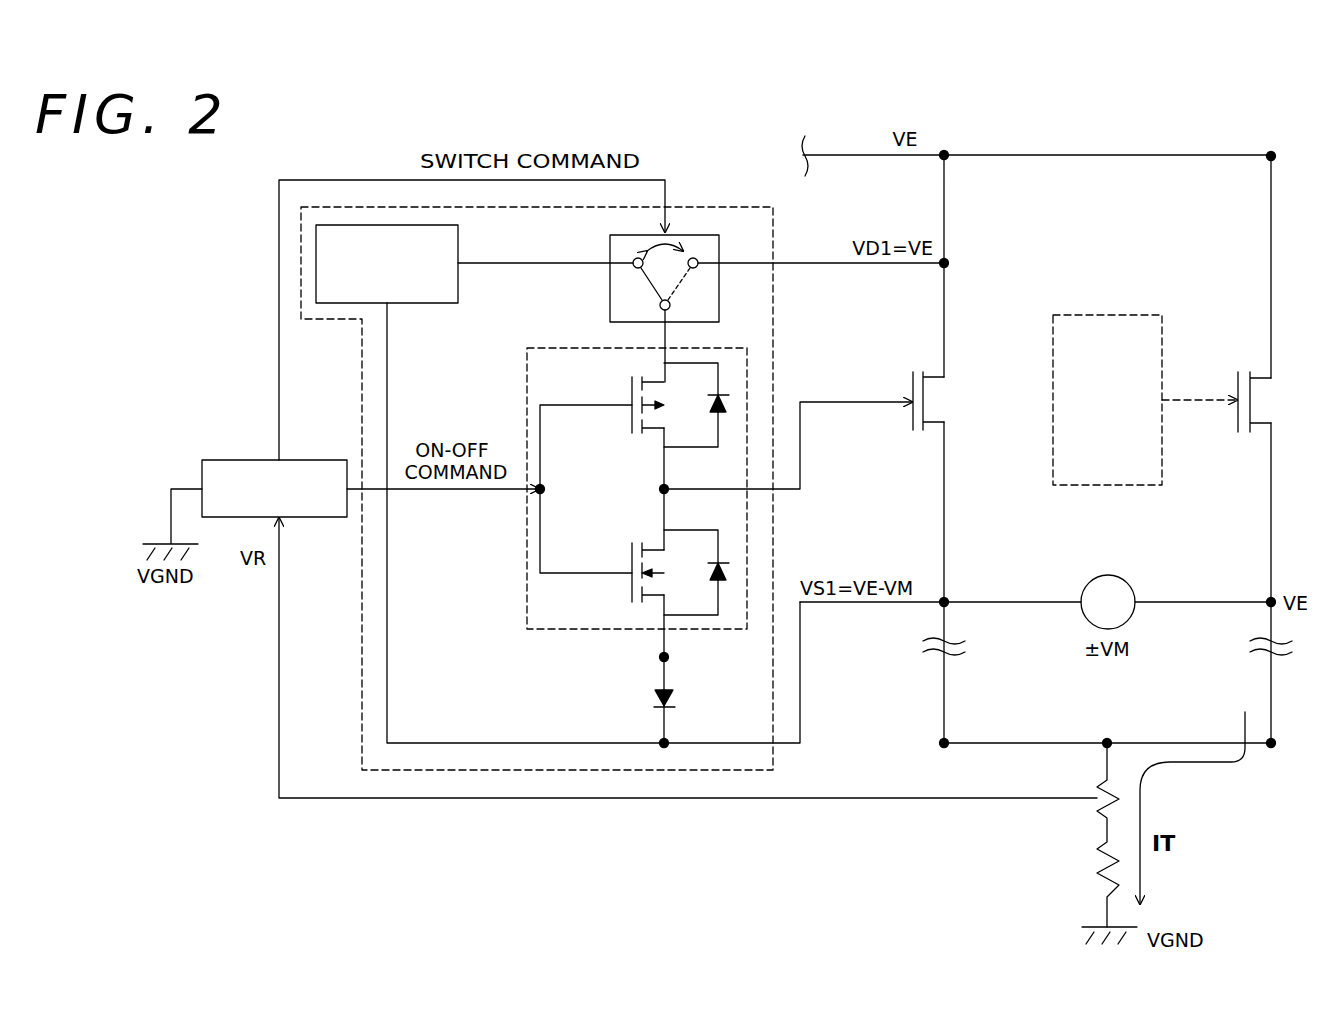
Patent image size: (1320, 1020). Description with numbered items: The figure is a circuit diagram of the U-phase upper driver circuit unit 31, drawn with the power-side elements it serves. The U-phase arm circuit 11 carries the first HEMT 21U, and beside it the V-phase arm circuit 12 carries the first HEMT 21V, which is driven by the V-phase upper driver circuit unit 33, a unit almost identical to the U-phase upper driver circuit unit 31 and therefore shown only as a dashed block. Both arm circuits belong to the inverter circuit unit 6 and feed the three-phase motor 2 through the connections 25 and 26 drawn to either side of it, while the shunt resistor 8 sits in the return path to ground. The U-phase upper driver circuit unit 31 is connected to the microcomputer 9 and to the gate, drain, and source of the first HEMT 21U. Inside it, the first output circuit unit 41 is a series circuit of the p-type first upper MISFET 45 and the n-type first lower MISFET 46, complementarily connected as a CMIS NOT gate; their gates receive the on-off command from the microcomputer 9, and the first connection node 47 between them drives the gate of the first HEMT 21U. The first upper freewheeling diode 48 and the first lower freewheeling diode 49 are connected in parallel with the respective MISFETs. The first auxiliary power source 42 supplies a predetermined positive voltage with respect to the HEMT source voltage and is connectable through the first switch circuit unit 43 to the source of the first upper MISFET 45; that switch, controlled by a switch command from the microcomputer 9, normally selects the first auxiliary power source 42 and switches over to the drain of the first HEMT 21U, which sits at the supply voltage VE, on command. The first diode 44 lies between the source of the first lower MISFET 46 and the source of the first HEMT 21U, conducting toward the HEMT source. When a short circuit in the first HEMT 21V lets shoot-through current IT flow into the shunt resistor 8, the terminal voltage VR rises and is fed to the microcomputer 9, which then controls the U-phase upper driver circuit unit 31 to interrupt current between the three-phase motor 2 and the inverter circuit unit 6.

The three-phase motor 2 is at (1108, 574).
The inverter circuit unit 6 is at (1269, 768).
The shunt resistor 8 is at (1097, 870).
The microcomputer 9 is at (252, 459).
The power supply line 11 is at (947, 187).
The V-phase arm circuit 12 is at (1268, 210).
The first HEMT 21U is at (912, 385).
The first HEMT 21V is at (1237, 385).
The motor wire 25 is at (1027, 606).
The motor wire 26 is at (1197, 606).
The U-phase upper driver circuit unit 31 is at (722, 206).
The V-phase upper driver circuit unit 33 is at (1110, 314).
The first output circuit unit 41 is at (582, 640).
The first auxiliary power source 42 is at (441, 304).
The first switch circuit unit 43 is at (609, 299).
The first diode 44 is at (677, 699).
The first upper MISFET 45 is at (631, 392).
The first lower MISFET 46 is at (631, 560).
The first connection node 47 is at (668, 486).
The first upper freewheeling diode 48 is at (711, 405).
The first lower freewheeling diode 49 is at (711, 573).